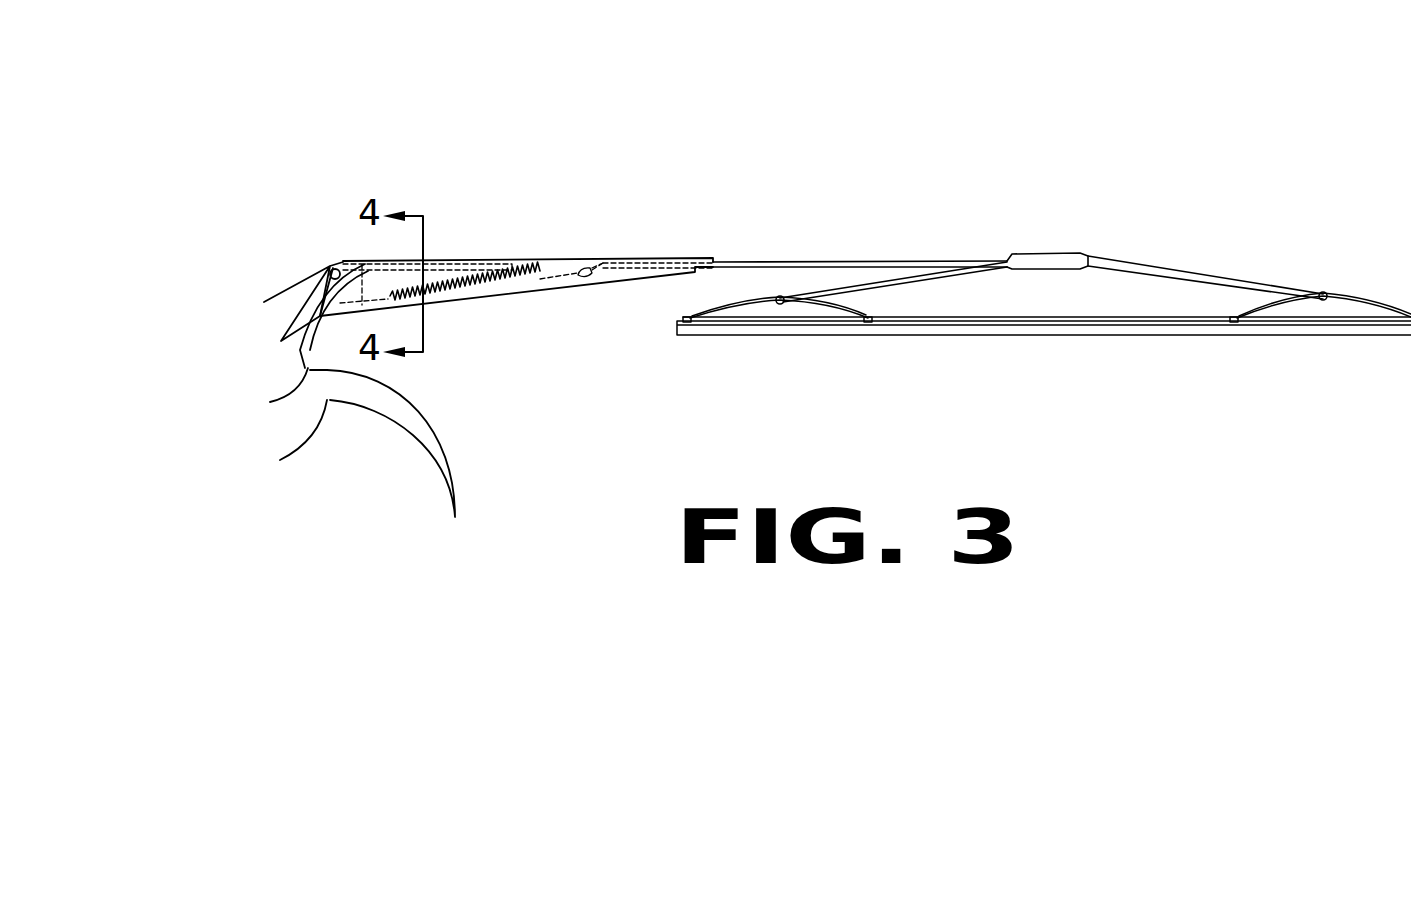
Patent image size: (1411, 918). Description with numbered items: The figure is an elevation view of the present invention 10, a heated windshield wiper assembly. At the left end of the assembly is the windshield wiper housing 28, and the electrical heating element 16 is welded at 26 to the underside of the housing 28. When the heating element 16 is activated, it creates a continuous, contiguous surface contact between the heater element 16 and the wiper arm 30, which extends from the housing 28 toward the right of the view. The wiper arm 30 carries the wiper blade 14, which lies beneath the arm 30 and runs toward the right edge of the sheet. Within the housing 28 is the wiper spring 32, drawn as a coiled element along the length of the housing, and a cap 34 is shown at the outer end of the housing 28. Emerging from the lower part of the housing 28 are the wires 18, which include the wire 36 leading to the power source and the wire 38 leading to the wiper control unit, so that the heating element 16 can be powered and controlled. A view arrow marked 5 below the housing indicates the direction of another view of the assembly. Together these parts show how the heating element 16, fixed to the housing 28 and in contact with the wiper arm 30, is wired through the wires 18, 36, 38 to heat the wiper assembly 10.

The present invention 10 is at (780, 186).
The wiper blade 14 is at (1007, 334).
The electrical heating element 16 is at (463, 262).
The wires 18 is at (405, 466).
The weld 26 is at (443, 262).
The windshield wiper housing 28 is at (497, 300).
The wiper arm 30 is at (893, 259).
The wiper spring 32 is at (453, 292).
The cap 34 is at (303, 270).
The wire to the power source 36 is at (287, 393).
The wire to the wiper control unit 38 is at (297, 448).
The view direction arrow 5 is at (358, 440).